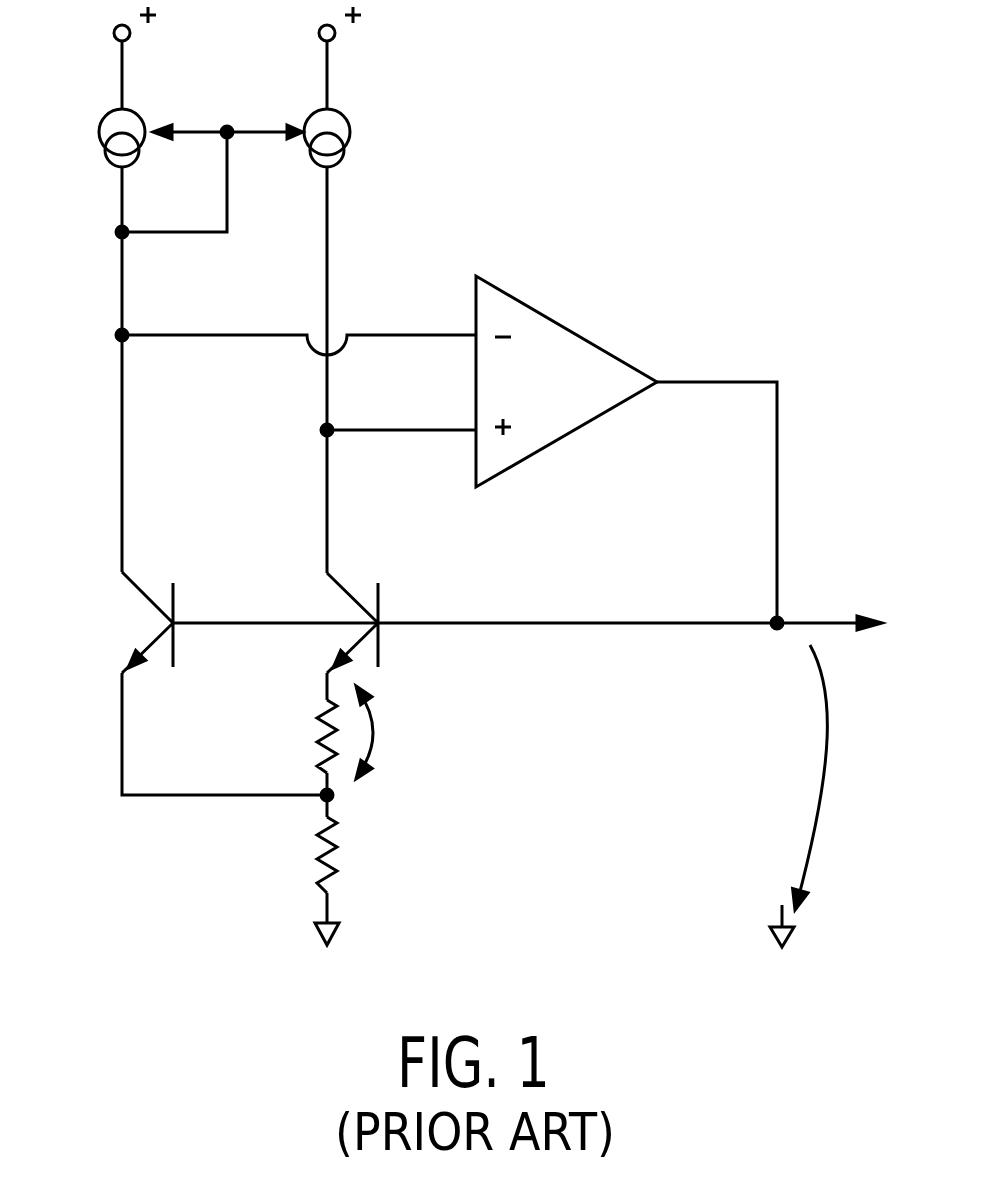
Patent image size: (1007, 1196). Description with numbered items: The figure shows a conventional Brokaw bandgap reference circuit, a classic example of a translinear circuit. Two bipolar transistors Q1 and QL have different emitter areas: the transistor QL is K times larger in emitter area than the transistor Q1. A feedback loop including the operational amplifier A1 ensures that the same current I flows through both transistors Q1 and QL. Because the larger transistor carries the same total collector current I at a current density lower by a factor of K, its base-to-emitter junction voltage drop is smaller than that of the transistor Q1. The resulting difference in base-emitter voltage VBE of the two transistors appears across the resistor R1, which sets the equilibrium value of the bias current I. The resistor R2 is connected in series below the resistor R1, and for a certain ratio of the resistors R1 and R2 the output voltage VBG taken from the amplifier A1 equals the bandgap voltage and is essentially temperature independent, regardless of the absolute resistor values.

The current I is at (221, 136).
The operational amplifier A1 is at (566, 381).
The bipolar transistor Q1 is at (118, 622).
The bipolar transistor QL is at (323, 622).
The resistor R1 is at (298, 736).
The resistor R2 is at (298, 855).
The difference in base-emitter voltage VBE is at (413, 732).
The output voltage VBG is at (841, 796).